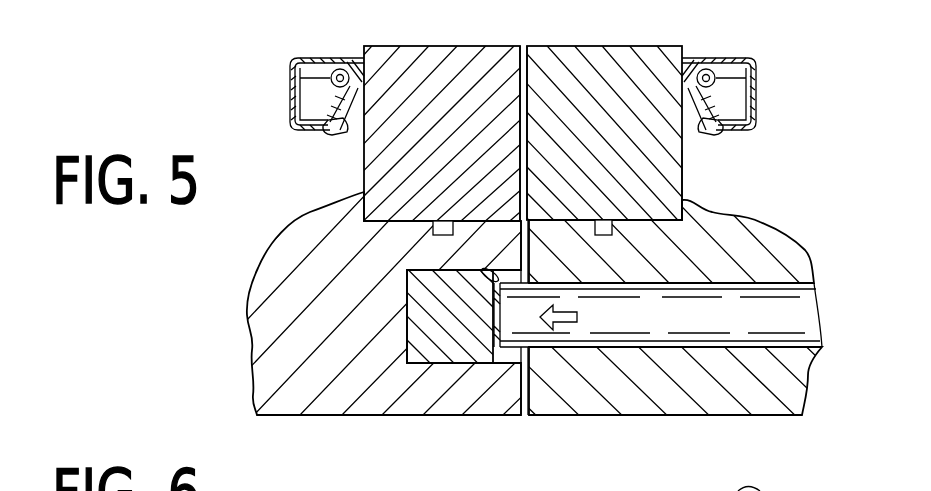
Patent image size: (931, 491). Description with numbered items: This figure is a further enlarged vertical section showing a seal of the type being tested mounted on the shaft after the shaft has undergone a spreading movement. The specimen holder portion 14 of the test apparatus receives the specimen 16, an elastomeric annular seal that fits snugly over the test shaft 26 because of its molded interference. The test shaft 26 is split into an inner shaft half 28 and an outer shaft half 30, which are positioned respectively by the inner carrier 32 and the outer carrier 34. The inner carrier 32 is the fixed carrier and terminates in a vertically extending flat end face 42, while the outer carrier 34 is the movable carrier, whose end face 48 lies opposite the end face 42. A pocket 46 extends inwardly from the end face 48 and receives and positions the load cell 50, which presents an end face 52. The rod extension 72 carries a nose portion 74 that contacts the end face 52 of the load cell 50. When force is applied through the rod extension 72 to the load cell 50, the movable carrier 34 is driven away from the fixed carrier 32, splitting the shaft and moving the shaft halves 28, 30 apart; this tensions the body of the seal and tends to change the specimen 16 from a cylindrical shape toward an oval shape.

The specimen holder portion 14 is at (803, 126).
The specimen 16 is at (272, 86).
The test shaft 26 is at (705, 181).
The inner shaft half 28 is at (590, 57).
The outer shaft half 30 is at (467, 57).
The inner carrier 32 is at (616, 392).
The outer carrier 34 is at (332, 390).
The end face 42 is at (528, 410).
The pocket 46 is at (508, 358).
The end face 48 is at (525, 262).
The load cell 50 is at (430, 342).
The end face 52 is at (484, 270).
The rod extension 72 is at (697, 320).
The nose portion 74 is at (490, 327).